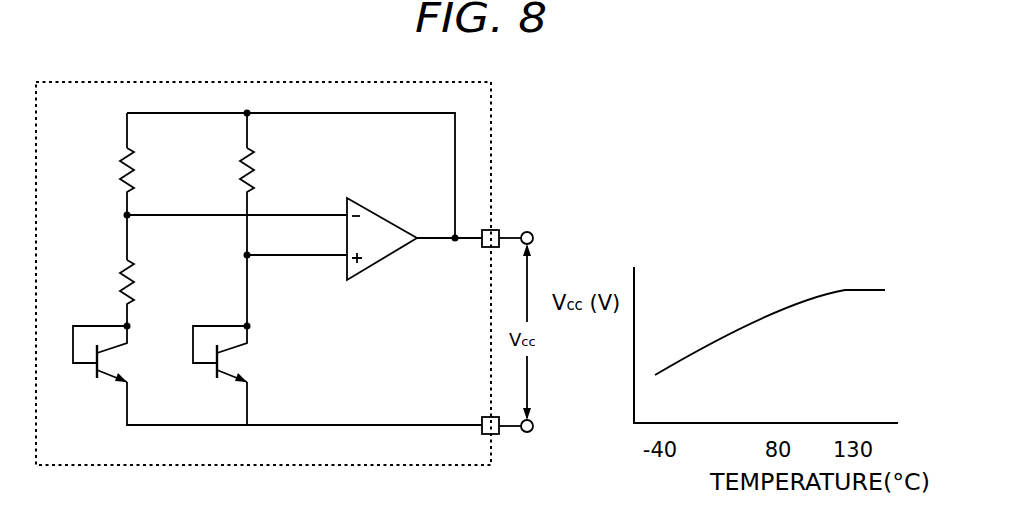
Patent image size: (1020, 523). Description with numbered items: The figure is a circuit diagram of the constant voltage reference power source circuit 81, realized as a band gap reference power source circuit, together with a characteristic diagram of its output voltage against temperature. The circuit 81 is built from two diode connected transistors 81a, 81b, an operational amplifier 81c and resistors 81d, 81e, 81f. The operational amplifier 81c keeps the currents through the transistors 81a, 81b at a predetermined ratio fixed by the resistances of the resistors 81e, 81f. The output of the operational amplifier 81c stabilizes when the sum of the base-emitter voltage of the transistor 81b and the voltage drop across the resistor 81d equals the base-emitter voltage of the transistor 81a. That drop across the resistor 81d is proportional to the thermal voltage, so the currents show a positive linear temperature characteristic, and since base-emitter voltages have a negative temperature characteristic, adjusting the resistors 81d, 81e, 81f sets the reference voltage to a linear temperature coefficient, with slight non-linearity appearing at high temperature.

The constant voltage reference power source circuit 81 is at (492, 121).
The diode connected transistor 81a is at (217, 368).
The diode connected transistor 81b is at (97, 368).
The operational amplifier 81c is at (383, 210).
The resistor 81d is at (119, 258).
The resistor 81e is at (138, 153).
The resistor 81f is at (258, 153).